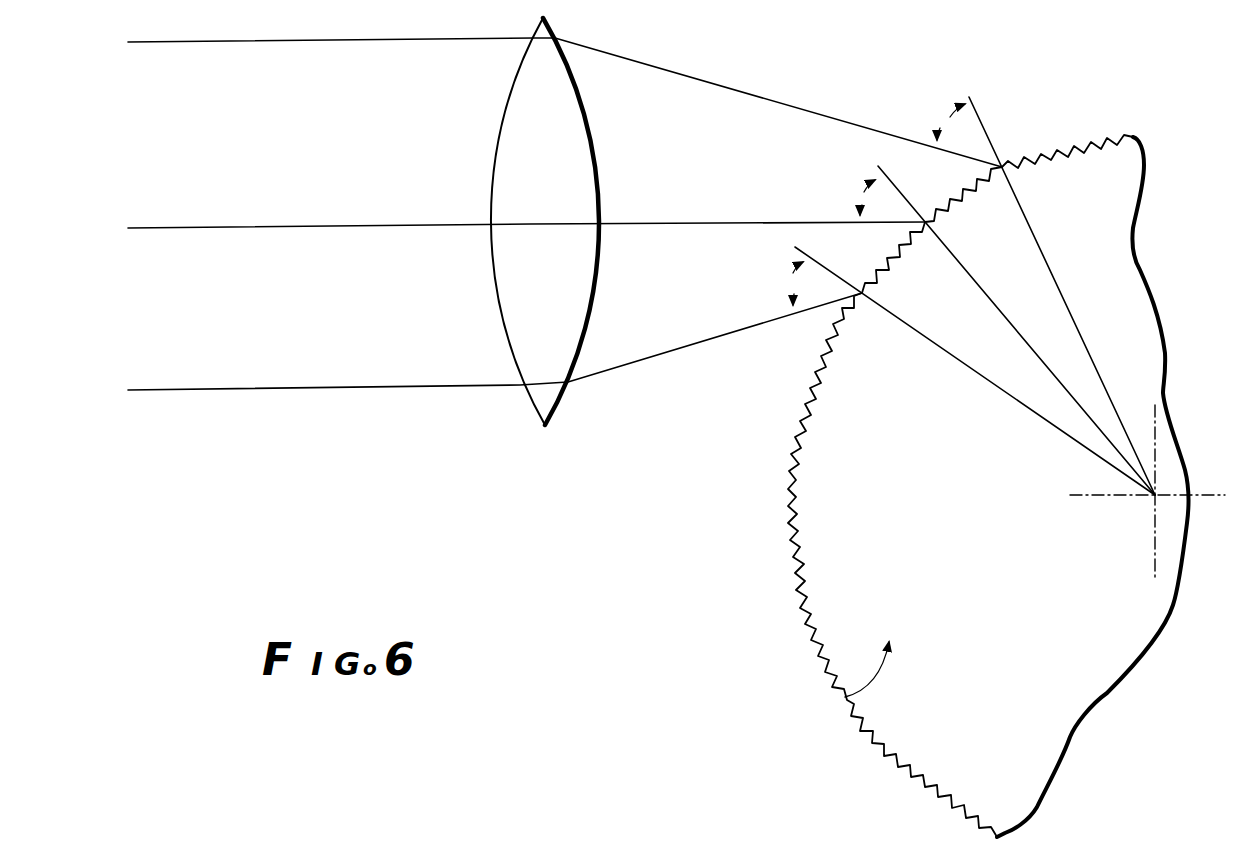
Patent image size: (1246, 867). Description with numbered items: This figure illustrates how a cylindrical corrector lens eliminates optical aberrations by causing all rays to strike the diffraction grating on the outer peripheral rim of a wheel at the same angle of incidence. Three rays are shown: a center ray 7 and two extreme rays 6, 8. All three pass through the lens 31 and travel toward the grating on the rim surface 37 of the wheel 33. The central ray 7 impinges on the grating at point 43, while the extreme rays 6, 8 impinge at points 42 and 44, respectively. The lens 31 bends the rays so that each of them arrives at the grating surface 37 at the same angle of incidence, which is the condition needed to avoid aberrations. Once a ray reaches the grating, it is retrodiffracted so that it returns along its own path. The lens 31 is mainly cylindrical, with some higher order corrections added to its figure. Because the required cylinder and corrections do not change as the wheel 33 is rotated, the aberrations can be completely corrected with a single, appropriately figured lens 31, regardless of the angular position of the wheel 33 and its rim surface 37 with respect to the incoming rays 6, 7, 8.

The extreme ray 6 is at (738, 91).
The center ray 7 is at (667, 222).
The extreme ray 8 is at (682, 348).
The lens 31 is at (494, 106).
The wheel 33 is at (845, 697).
The rim surface 37 is at (800, 574).
The point 42 is at (1002, 170).
The point 43 is at (925, 225).
The point 44 is at (862, 296).